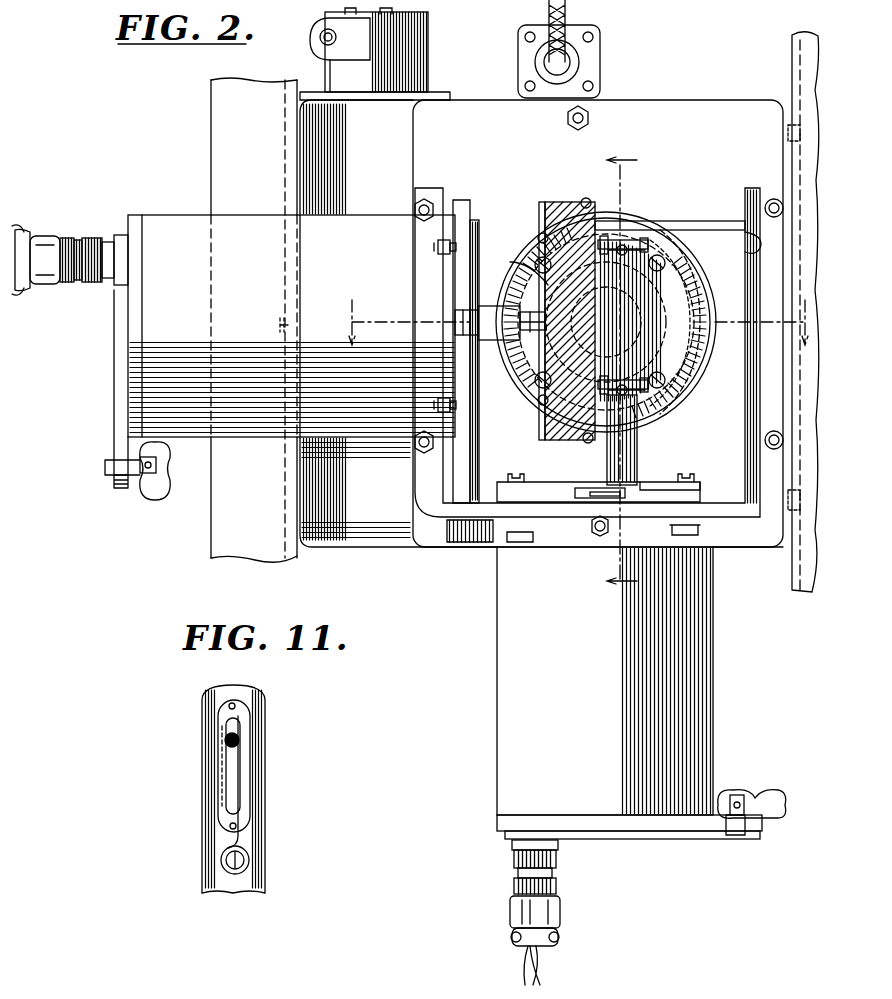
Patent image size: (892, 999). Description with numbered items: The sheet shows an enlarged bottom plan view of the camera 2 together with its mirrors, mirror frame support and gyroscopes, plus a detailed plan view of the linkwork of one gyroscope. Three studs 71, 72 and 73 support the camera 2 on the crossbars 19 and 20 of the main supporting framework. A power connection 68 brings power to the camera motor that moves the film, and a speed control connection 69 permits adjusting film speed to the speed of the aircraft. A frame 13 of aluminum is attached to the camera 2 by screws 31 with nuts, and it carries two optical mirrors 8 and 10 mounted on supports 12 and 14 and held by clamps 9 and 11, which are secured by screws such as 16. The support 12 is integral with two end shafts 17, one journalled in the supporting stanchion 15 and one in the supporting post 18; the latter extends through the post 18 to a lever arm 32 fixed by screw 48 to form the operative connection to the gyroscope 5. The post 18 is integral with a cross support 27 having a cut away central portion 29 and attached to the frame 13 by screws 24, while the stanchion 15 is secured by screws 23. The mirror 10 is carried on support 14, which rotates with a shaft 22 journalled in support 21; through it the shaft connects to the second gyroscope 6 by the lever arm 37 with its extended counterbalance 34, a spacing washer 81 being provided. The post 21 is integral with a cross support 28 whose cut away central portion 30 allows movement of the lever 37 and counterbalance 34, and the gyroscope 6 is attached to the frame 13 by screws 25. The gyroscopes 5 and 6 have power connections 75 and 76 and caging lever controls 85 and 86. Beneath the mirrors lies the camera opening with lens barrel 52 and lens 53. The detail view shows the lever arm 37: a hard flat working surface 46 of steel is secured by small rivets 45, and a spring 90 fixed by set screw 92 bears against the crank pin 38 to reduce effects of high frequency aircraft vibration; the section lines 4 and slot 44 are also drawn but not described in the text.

In FIG. 2, the camera 2 is at (694, 92).
In FIG. 2, the section line 4- 4 is at (579, 334).
In FIG. 2, the gyroscope 5 is at (468, 680).
In FIG. 2, the gyroscope 6 is at (261, 208).
In FIG. 2, the optical mirror 8 is at (640, 300).
In FIG. 2, the clamp 9 is at (630, 250).
In FIG. 2, the optical mirror 10 is at (566, 202).
In FIG. 2, the clamp 11 is at (540, 235).
In FIG. 2, the support 12 is at (625, 245).
In FIG. 2, the frame 13 is at (441, 533).
In FIG. 2, the support 14 is at (540, 205).
In FIG. 2, the supporting stanchion 15 is at (710, 221).
In FIG. 2, the screw 16 is at (650, 240).
In FIG. 2, the end shaft 17 is at (612, 240).
In FIG. 2, the supporting post 18 is at (630, 450).
In FIG. 2, the crossbar 19 is at (211, 80).
In FIG. 2, the crossbar 20 is at (795, 590).
In FIG. 2, the support 21 is at (525, 335).
In FIG. 2, the shaft 22 is at (533, 333).
In FIG. 2, the screw 23 is at (755, 244).
In FIG. 2, the screw 24 is at (514, 478).
In FIG. 2, the screw 25 is at (456, 240).
In FIG. 2, the cross support 27 is at (556, 492).
In FIG. 2, the cross support 28 is at (468, 215).
In FIG. 2, the cut away central portion 29 is at (645, 490).
In FIG. 2, the cut away central portion 30 is at (470, 280).
In FIG. 2, the screw 31 is at (425, 200).
In FIG. 2, the lever arm 32 is at (594, 488).
In FIG. 2, the counterbalance 34 is at (455, 318).
In FIG. 11, the lever arm 37 is at (265, 766).
In FIG. 11, the crank pin 38 is at (226, 740).
In FIG. 11, the slide plate 44 is at (220, 797).
In FIG. 11, the rivet 45 is at (232, 703).
In FIG. 11, the working surface 46 is at (224, 778).
In FIG. 2, the screw 48 is at (611, 500).
In FIG. 2, the lens barrel 52 is at (700, 340).
In FIG. 2, the lens 53 is at (690, 365).
In FIG. 2, the power connection 68 is at (595, 30).
In FIG. 2, the speed control connection 69 is at (420, 52).
In FIG. 2, the stud 71 is at (282, 320).
In FIG. 2, the stud 72 is at (792, 110).
In FIG. 2, the stud 73 is at (795, 540).
In FIG. 2, the power connection 75 is at (510, 918).
In FIG. 2, the power connection 76 is at (42, 235).
In FIG. 2, the spacing washer 81 is at (510, 262).
In FIG. 2, the caging lever control 85 is at (773, 818).
In FIG. 2, the caging lever control 86 is at (157, 500).
In FIG. 11, the spring 90 is at (240, 838).
In FIG. 11, the set screw 92 is at (249, 860).